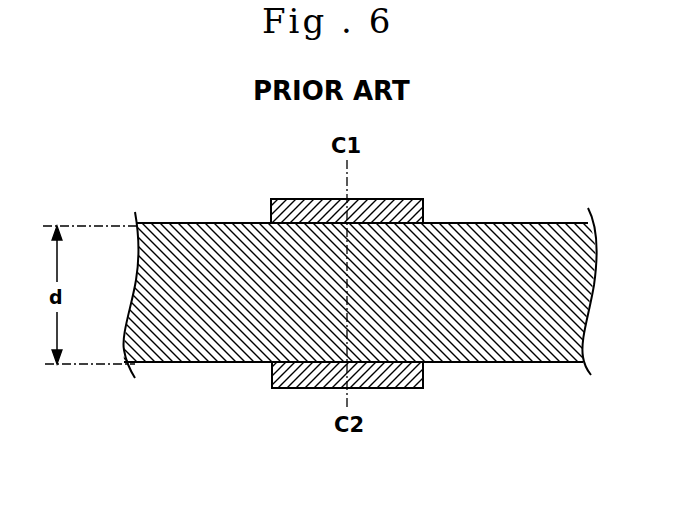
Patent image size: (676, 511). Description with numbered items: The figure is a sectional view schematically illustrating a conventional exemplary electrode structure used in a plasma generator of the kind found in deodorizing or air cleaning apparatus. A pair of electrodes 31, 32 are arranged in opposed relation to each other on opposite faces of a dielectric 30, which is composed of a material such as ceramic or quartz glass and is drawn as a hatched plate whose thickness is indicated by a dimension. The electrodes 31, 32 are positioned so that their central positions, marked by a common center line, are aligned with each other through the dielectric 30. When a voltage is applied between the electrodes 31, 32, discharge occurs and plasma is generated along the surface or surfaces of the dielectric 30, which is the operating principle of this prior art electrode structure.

The dielectric 30 is at (499, 345).
The electrode 31 is at (423, 199).
The electrode 32 is at (272, 386).